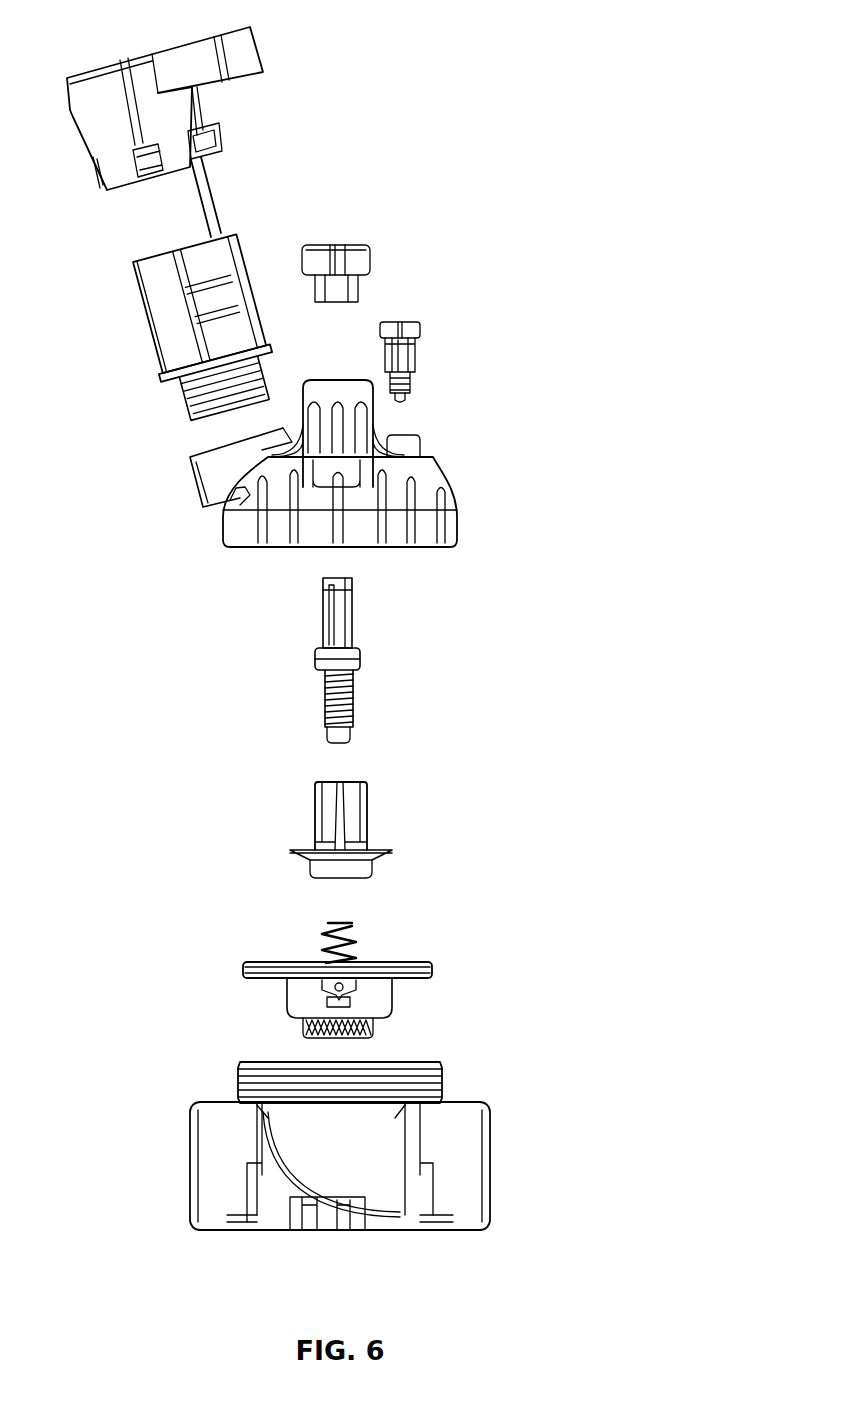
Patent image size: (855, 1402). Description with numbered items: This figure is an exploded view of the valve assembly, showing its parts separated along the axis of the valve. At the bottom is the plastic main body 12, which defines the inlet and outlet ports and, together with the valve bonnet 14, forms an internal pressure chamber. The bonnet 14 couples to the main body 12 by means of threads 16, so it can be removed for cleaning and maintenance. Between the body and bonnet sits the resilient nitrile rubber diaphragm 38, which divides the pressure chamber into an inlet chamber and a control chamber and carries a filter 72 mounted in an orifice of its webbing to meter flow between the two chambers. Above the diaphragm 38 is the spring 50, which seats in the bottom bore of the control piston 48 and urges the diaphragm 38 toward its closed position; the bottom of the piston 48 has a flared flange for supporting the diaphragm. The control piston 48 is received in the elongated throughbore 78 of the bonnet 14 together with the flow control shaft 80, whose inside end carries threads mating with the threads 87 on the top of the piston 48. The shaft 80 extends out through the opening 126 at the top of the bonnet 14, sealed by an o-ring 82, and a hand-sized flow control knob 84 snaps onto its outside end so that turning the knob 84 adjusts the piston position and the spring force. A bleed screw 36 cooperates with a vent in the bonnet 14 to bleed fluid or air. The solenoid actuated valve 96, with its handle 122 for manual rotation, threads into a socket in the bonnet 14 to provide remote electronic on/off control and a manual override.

The main body 12 is at (208, 1145).
The valve bonnet 14 is at (437, 487).
The threads 16 is at (240, 1073).
The bleed screw 36 is at (420, 350).
The diaphragm 38 is at (293, 998).
The control piston 48 is at (328, 817).
The spring 50 is at (357, 933).
The filter 72 is at (360, 988).
The throughbore 78 is at (350, 473).
The flow control shaft 80 is at (343, 640).
The o-ring 82 is at (357, 655).
The flow control knob 84 is at (360, 263).
The threads 87 is at (352, 703).
The solenoid actuated valve 96 is at (137, 317).
The handle 122 is at (247, 53).
The opening 126 is at (343, 375).